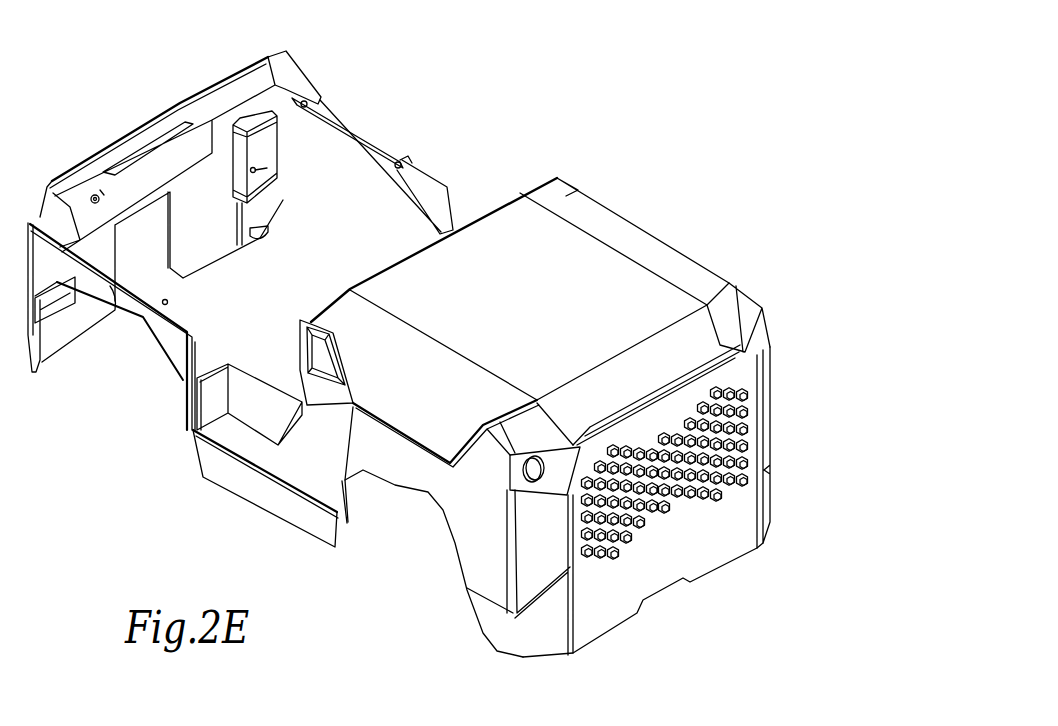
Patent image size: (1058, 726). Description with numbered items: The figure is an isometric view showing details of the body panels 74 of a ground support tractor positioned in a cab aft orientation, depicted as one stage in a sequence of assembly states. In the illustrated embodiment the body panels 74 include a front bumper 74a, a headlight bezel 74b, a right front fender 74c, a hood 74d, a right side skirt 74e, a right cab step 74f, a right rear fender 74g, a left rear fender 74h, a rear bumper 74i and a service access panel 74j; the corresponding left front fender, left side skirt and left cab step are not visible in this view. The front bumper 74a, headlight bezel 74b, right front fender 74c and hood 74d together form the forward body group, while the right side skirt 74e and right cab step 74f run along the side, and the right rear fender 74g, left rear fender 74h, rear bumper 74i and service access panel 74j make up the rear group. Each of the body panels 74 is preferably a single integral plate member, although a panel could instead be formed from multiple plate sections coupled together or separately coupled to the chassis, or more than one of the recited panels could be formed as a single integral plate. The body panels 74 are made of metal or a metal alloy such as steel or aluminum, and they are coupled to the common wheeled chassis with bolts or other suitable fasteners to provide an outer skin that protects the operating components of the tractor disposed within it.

The body panels 74 is at (650, 232).
The front bumper 74a is at (693, 545).
The headlight bezel 74b is at (703, 335).
The right front fender 74c is at (430, 491).
The hood 74d is at (557, 311).
The right side skirt 74e is at (313, 515).
The right cab step 74f is at (237, 440).
The right rear fender 74g is at (176, 352).
The left rear fender 74h is at (408, 158).
The rear bumper 74i is at (215, 247).
The service access panel 74j is at (230, 104).